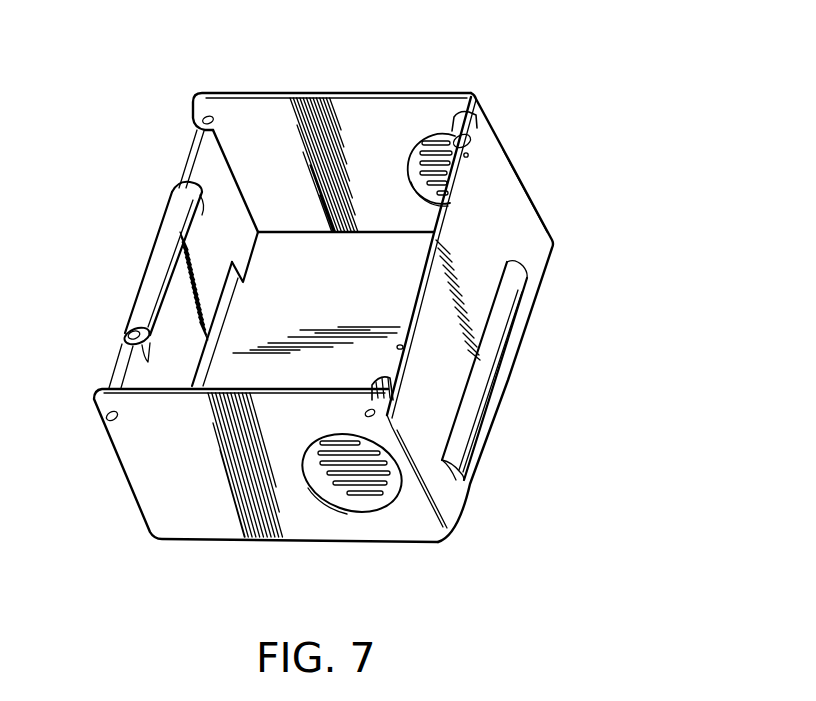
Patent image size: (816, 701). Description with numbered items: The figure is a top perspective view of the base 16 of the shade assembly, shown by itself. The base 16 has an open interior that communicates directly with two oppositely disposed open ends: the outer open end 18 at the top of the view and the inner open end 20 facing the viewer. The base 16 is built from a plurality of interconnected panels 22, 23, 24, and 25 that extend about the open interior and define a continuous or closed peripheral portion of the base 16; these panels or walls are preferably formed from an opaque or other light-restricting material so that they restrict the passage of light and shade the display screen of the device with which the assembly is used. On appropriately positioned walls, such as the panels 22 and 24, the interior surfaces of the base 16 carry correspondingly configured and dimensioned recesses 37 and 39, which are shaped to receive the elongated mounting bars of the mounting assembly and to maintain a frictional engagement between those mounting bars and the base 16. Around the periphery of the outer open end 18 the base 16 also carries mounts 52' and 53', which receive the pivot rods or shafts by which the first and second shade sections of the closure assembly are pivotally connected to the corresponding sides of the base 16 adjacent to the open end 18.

The base 16 is at (599, 153).
The outer open end 18 is at (363, 112).
The inner open end 20 is at (318, 234).
The panel 22 is at (527, 250).
The panel 23 is at (206, 520).
The panel 24 is at (242, 239).
The panel 25 is at (294, 187).
The recess 37 is at (222, 306).
The recess 39 is at (470, 414).
The mount 52' is at (125, 259).
The mount 53' is at (421, 224).